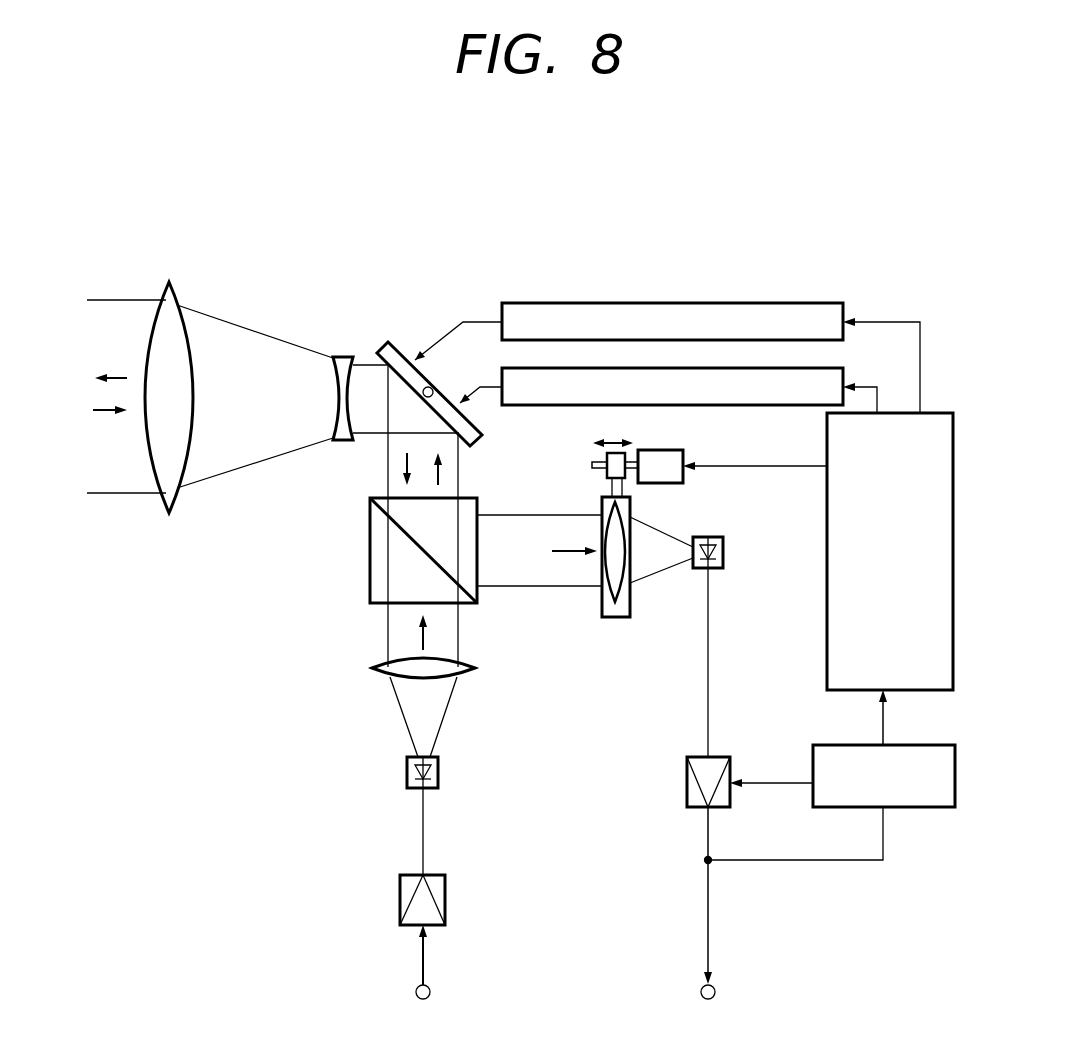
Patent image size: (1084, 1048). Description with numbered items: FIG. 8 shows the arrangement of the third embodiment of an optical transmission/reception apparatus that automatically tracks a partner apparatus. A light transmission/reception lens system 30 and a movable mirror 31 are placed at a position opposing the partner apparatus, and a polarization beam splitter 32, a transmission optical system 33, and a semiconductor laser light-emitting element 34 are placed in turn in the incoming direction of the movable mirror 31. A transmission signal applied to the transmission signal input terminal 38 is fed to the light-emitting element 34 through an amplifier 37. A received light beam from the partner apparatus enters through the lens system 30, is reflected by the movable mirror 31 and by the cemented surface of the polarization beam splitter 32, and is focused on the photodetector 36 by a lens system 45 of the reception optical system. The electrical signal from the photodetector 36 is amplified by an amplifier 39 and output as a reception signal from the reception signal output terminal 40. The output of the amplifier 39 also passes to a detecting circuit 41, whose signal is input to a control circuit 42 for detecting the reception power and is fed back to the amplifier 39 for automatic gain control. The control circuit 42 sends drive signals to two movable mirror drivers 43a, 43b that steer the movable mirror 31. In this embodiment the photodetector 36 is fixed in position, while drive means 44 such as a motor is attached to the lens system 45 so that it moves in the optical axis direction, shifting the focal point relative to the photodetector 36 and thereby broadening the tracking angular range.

The light transmission/reception lens system 30 is at (172, 302).
The movable mirror 31 is at (400, 363).
The polarization beam splitter 32 is at (370, 522).
The transmission optical system 33 is at (372, 667).
The semiconductor laser light-emitting element 34 is at (407, 766).
The photodetector 36 is at (725, 548).
The amplifier 37 is at (400, 888).
The transmission signal input terminal 38 is at (416, 991).
The amplifier 39 is at (687, 772).
The reception signal output terminal 40 is at (715, 991).
The detecting circuit 41 is at (813, 757).
The control circuit 42 is at (940, 413).
The movable mirror driver 43a is at (752, 303).
The movable mirror driver 43b is at (534, 405).
The drive means 44 is at (682, 450).
The lens system 45 is at (615, 618).